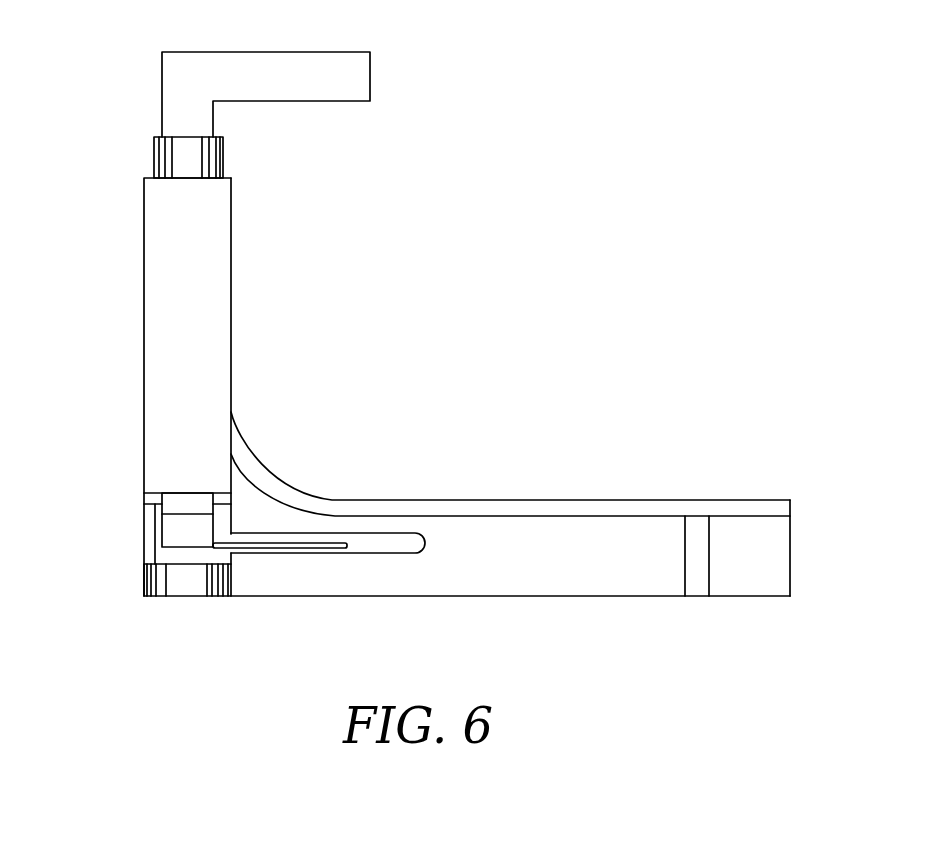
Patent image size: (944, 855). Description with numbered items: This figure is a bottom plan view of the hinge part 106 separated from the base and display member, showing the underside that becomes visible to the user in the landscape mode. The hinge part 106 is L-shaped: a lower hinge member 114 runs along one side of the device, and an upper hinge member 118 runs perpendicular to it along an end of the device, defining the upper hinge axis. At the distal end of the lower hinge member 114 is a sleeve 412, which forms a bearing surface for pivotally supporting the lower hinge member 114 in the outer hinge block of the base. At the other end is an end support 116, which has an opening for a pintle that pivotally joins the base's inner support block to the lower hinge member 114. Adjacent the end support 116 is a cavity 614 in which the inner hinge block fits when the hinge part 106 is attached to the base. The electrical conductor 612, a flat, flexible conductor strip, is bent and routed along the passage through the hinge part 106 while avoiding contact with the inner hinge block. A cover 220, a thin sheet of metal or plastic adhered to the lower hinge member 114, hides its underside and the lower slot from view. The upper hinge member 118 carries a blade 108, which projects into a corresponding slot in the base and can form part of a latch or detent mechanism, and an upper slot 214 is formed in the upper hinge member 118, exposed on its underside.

The hinge part 106 is at (780, 560).
The blade 108 is at (697, 587).
The lower hinge member 114 is at (232, 321).
The end support 116 is at (187, 585).
The upper hinge member 118 is at (527, 597).
The upper slot 214 is at (388, 545).
The cover 220 is at (150, 243).
The sleeve 412 is at (153, 162).
The electrical conductor 612 is at (306, 58).
The cavity 614 is at (150, 552).